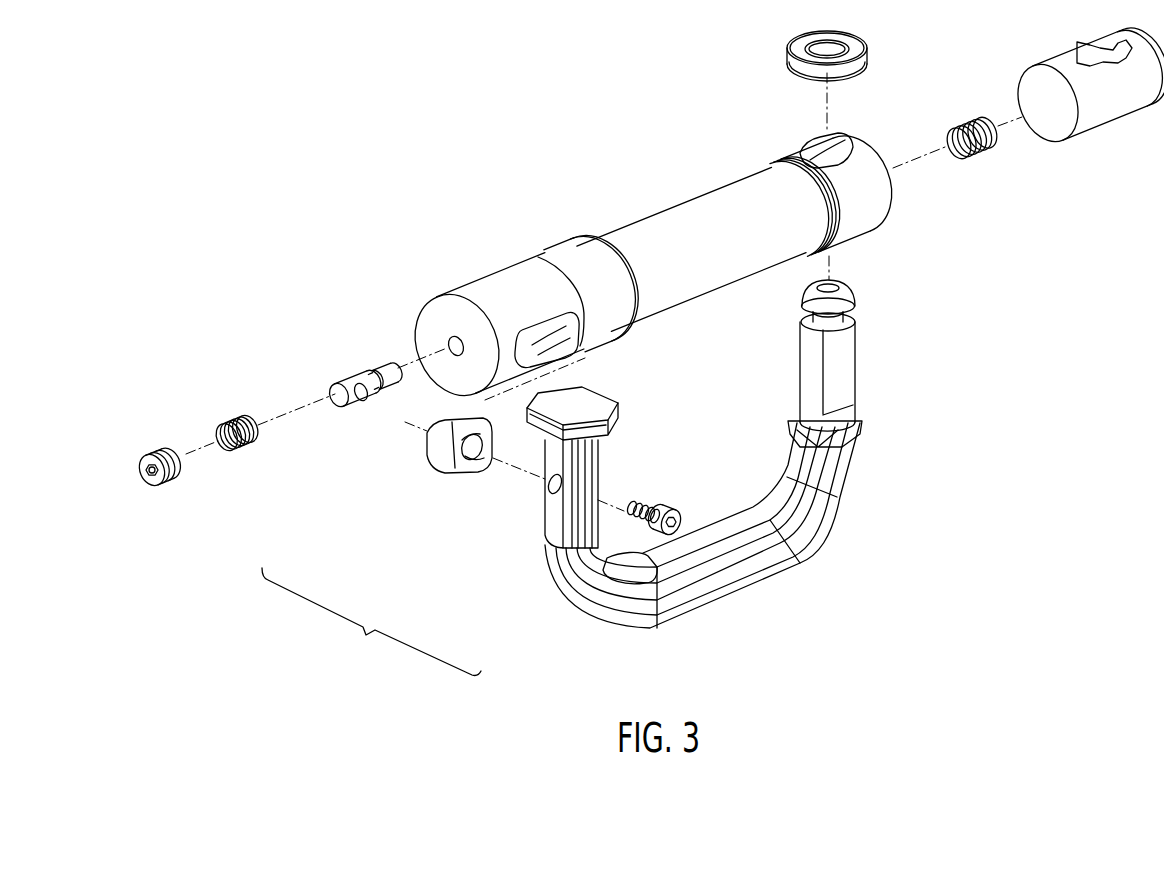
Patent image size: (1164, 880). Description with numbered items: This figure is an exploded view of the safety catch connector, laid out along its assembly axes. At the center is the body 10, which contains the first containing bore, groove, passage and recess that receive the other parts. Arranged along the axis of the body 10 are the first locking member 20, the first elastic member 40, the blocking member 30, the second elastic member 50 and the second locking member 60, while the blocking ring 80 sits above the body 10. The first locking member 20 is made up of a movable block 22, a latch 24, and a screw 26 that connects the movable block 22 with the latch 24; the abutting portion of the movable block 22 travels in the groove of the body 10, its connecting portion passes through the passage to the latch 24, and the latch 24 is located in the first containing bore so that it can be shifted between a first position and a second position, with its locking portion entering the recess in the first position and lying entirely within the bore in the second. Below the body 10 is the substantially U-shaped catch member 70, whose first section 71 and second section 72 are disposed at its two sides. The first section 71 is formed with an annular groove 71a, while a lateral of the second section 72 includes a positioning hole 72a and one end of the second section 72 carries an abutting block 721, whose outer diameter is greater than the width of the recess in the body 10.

The body 10 is at (647, 216).
The first locking member 20 is at (371, 622).
The movable block 22 is at (442, 475).
The latch 24 is at (340, 405).
The screw 26 is at (629, 510).
The blocking member 30 is at (155, 452).
The first elastic member 40 is at (231, 419).
The second elastic member 50 is at (978, 152).
The second locking member 60 is at (1100, 105).
The catch member 70 is at (827, 496).
The first section 71 is at (842, 384).
The annular groove 71a is at (845, 318).
The second section 72 is at (597, 488).
The positioning hole 72a is at (552, 478).
The abutting block 721 is at (592, 398).
The blocking ring 80 is at (788, 60).